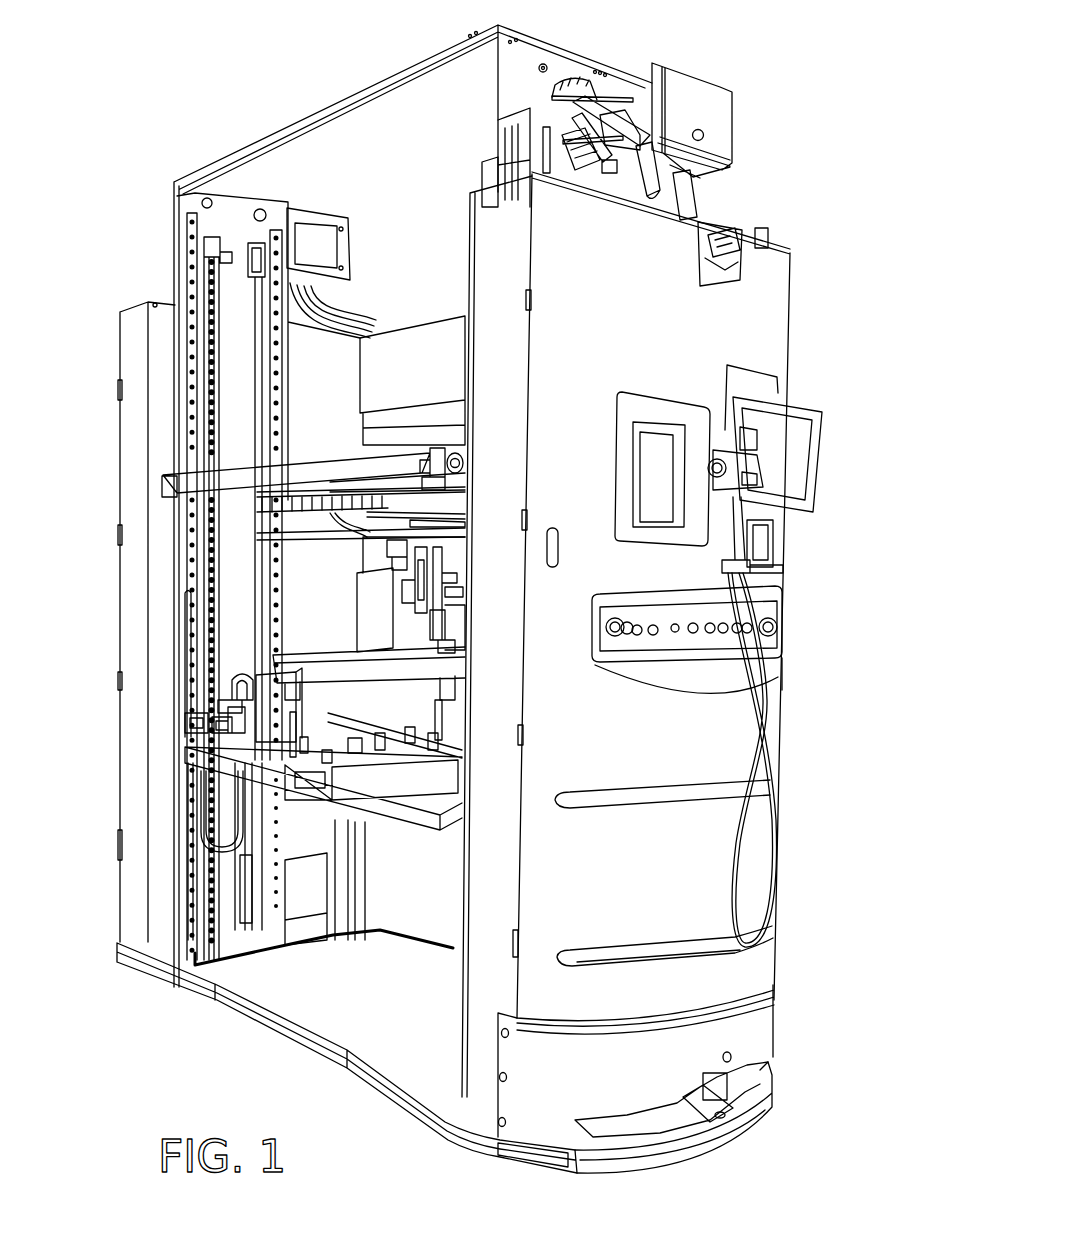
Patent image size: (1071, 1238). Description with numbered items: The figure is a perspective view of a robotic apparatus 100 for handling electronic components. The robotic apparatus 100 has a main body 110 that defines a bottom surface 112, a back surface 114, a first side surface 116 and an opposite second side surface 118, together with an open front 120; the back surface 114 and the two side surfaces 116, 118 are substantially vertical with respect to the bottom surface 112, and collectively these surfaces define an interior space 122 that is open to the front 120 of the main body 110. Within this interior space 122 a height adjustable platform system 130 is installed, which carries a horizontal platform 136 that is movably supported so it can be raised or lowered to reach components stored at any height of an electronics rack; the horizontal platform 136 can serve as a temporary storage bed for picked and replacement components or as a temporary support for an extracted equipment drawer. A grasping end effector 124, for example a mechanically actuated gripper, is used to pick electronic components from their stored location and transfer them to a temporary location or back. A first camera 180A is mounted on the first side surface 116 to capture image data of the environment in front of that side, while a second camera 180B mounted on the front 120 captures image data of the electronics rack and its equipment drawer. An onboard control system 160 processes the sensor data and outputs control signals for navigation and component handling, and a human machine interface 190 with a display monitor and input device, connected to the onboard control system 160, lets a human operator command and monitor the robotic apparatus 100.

The robotic apparatus 100 is at (797, 42).
The main body 110 is at (217, 148).
The bottom surface 112 is at (343, 983).
The back surface 114 is at (433, 318).
The first side surface 116 is at (147, 368).
The second side surface 118 is at (735, 340).
The open front 120 is at (302, 633).
The interior space 122 is at (320, 370).
The grasping end effector 124 is at (467, 567).
The height adjustable platform system 130 is at (235, 222).
The horizontal platform 136 is at (275, 745).
The onboard control system 160 is at (690, 745).
The first camera 180A is at (747, 217).
The second camera 180B is at (477, 173).
The human machine interface 190 is at (820, 455).